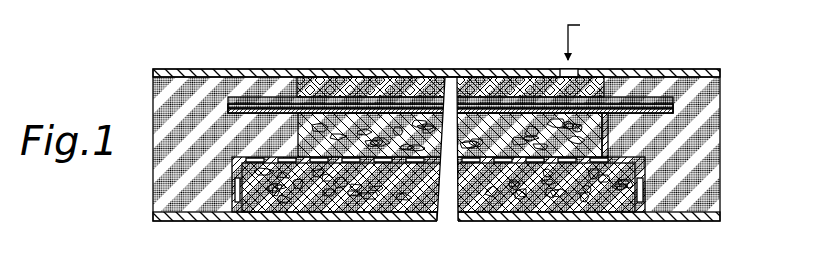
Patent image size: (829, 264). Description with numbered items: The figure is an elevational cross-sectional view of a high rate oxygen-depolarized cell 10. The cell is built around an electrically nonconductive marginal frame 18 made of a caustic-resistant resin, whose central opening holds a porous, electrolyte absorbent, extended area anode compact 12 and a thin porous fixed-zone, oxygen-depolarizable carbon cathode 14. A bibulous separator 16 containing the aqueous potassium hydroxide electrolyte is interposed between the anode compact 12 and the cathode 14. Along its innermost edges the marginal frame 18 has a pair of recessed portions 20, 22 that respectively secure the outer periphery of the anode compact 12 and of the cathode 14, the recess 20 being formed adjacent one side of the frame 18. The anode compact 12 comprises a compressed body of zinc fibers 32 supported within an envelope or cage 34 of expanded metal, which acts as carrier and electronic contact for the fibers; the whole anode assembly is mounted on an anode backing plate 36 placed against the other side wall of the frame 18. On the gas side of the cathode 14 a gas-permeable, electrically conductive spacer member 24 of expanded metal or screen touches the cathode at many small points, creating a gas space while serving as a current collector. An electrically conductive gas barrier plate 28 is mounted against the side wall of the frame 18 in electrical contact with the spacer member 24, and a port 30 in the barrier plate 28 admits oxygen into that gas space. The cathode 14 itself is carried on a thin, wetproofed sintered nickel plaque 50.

The high rate oxygen-depolarized cell 10 is at (424, 136).
The anode compact 12 is at (622, 186).
The carbon cathode 14 is at (313, 100).
The bibulous separator 16 is at (363, 133).
The marginal frame 18 is at (712, 127).
The recessed portion 20 is at (425, 207).
The recessed portion 22 is at (450, 65).
The spacer member 24 is at (478, 86).
The gas barrier plate 28 is at (681, 73).
The port 30 is at (563, 70).
The zinc fibers 32 is at (373, 197).
The cage of expanded metal 34 is at (319, 163).
The anode backing plate 36 is at (424, 217).
The sintered nickel plaque 50 is at (473, 218).